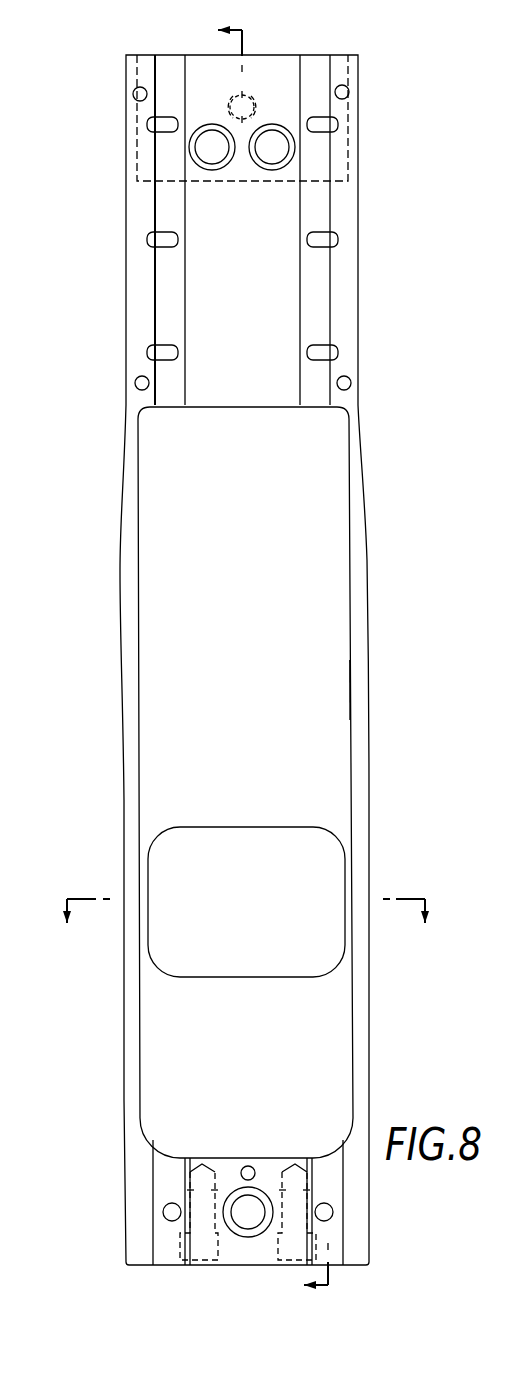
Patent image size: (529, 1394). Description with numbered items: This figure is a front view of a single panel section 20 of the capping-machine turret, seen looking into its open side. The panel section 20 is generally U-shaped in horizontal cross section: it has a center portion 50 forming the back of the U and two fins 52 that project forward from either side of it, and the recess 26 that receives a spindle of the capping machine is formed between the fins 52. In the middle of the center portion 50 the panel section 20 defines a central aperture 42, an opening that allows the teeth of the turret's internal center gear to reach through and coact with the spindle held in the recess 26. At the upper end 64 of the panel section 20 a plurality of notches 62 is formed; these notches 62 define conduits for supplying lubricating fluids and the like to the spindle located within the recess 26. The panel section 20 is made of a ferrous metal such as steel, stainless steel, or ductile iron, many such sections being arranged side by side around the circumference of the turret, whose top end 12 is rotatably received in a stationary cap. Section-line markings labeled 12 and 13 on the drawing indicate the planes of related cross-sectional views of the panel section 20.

The panel section 20 is at (220, 660).
The recess 26 is at (350, 697).
The central aperture 42 is at (253, 975).
The center portion 50 is at (258, 621).
The fin 52 is at (127, 635).
The notch 62 is at (338, 121).
The upper end 64 is at (112, 188).
The top end 12 is at (295, 659).
The section line 13- 13 is at (247, 887).